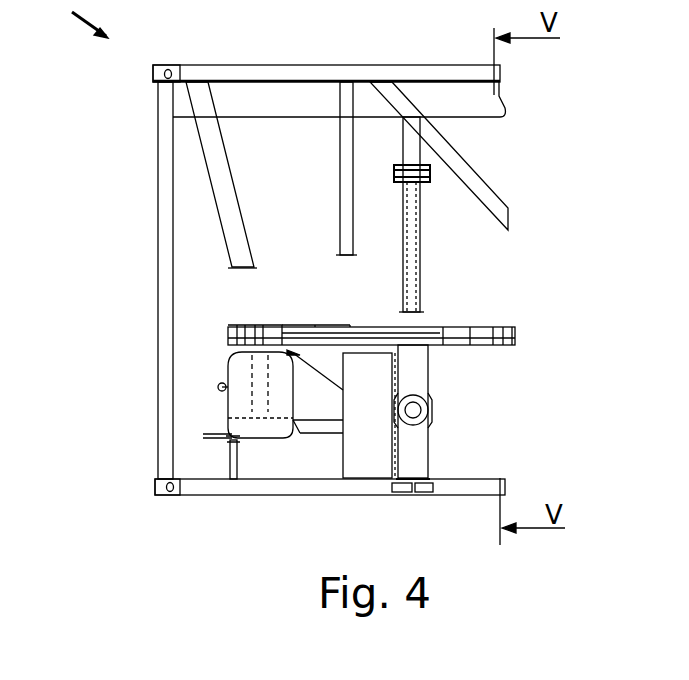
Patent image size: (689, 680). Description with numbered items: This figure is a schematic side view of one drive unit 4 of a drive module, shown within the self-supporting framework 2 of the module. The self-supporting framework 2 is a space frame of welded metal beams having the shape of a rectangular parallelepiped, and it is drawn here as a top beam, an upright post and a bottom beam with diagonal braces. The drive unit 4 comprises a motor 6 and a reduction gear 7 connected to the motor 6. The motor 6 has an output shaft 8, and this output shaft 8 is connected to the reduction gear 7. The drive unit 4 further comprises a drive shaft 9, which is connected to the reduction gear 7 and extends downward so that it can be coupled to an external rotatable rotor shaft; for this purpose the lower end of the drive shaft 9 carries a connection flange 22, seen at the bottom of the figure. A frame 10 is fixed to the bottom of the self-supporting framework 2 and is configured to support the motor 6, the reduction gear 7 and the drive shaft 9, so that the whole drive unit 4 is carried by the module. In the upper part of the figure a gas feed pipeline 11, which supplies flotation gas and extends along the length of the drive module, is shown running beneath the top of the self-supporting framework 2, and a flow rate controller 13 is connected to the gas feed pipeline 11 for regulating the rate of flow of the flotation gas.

The self-supporting framework 2 is at (158, 242).
The drive unit 4 is at (457, 327).
The motor 6 is at (226, 375).
The reduction gear 7 is at (333, 328).
The output shaft 8 is at (228, 347).
The drive shaft 9 is at (443, 476).
The frame 10 is at (362, 430).
The gas feed pipeline 11 is at (417, 280).
The flow rate controller 13 is at (429, 181).
The connection flange 22 is at (414, 493).